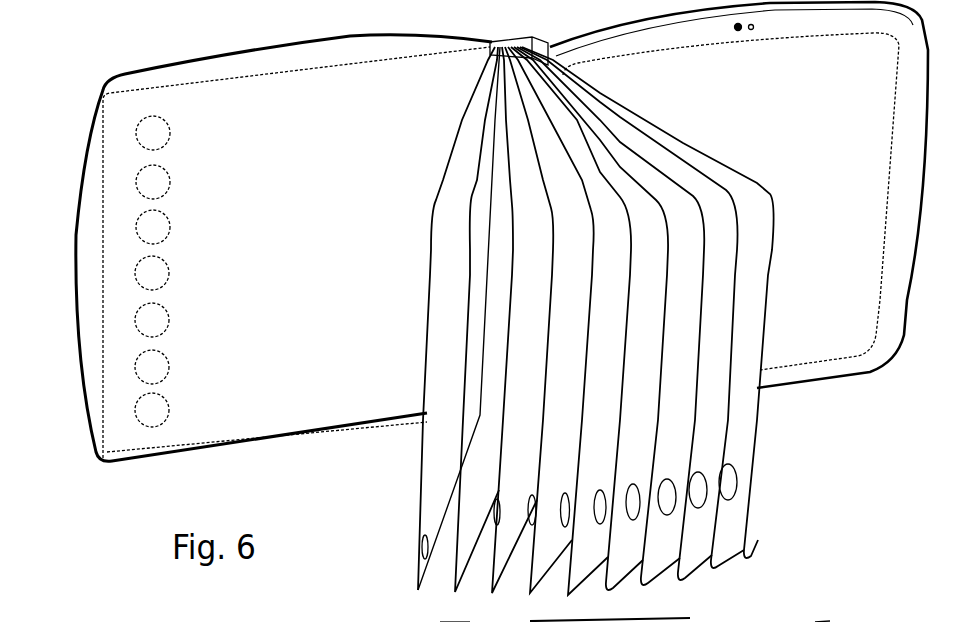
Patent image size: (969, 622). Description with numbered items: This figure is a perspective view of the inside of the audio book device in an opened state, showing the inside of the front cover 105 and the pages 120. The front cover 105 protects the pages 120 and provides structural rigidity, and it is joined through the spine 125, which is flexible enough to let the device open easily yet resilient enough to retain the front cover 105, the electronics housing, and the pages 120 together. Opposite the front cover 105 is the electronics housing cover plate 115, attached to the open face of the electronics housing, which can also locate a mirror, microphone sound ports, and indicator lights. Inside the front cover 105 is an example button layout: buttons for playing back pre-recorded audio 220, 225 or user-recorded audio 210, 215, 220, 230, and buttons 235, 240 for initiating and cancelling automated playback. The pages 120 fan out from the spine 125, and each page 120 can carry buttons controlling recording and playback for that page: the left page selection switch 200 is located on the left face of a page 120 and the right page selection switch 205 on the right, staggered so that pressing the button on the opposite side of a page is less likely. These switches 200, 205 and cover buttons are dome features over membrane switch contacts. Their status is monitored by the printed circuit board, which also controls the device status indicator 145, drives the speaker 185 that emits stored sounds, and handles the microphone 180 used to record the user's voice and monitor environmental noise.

The front cover 105 is at (183, 60).
The electronics housing cover plate 115 is at (841, 370).
The spine 125 is at (501, 40).
The pages 120 is at (422, 473).
The device status indicator 145 is at (453, 621).
The microphone 180 is at (642, 620).
The speaker 185 is at (820, 621).
The left page selection switch 200 is at (736, 487).
The right page selection switch 205 is at (423, 548).
The user-recorded audio playback button 210 is at (143, 131).
The user-recorded audio playback button 215 is at (143, 180).
The audio playback button 220 is at (141, 226).
The pre-recorded audio playback button 225 is at (140, 271).
The user-recorded audio playback button 230 is at (140, 319).
The automated playback button 235 is at (139, 364).
The automated playback button 240 is at (138, 411).